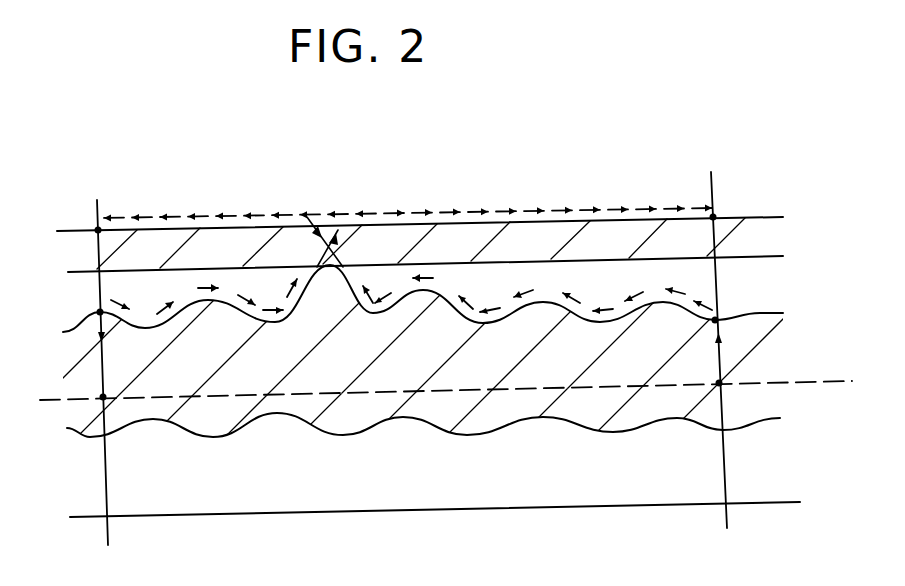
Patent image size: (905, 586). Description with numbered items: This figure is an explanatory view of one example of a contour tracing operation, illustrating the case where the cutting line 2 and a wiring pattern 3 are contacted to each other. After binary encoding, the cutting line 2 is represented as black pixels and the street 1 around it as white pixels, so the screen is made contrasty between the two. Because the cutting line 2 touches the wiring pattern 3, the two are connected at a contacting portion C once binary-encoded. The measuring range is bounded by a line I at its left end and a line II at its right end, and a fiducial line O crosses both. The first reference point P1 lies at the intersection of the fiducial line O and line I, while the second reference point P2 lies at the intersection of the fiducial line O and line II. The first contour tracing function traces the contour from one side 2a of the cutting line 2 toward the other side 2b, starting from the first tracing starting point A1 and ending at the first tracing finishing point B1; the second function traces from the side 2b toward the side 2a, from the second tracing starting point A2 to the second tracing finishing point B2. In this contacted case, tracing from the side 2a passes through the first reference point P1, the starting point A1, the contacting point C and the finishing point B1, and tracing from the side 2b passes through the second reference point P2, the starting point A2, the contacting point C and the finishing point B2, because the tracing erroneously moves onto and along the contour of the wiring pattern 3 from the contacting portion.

The street 1 is at (822, 476).
The cutting line 2 is at (632, 415).
The one side of the cutting line 2a is at (72, 342).
The other side of the cutting line 2b is at (780, 403).
The wiring pattern 3 is at (777, 232).
The fiducial line O is at (446, 392).
The line defining left end of measuring range I is at (99, 355).
The line defining right end of measuring range II is at (715, 335).
The first tracing starting point A1 is at (100, 312).
The second tracing starting point A2 is at (715, 320).
The first tracing finishing point B1 is at (713, 217).
The second tracing finishing point B2 is at (98, 230).
The first reference point P1 is at (98, 400).
The second reference point P2 is at (727, 390).
The contacting portion C is at (362, 247).